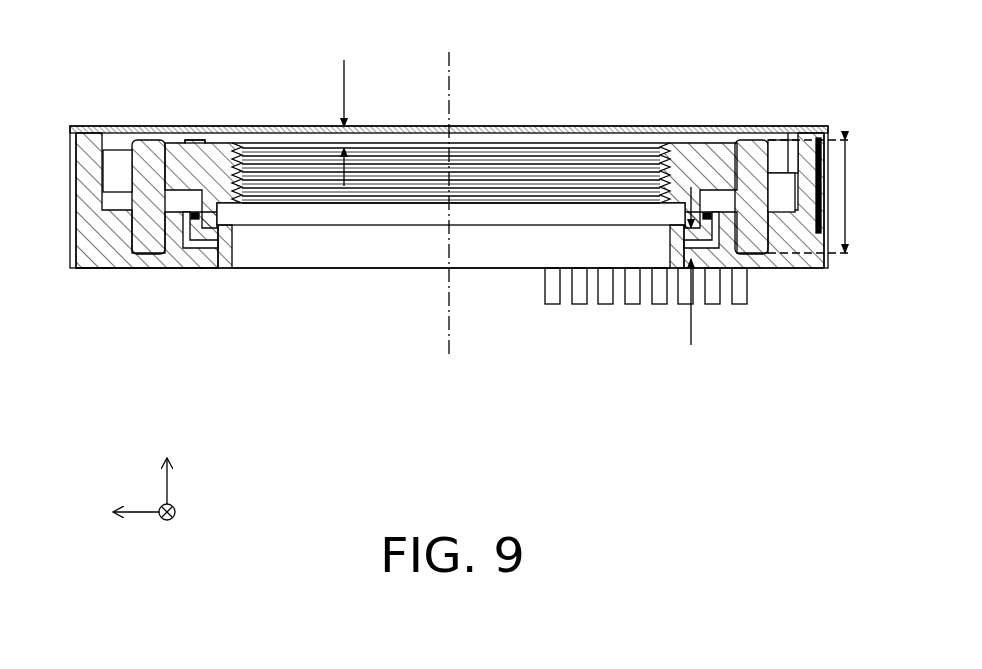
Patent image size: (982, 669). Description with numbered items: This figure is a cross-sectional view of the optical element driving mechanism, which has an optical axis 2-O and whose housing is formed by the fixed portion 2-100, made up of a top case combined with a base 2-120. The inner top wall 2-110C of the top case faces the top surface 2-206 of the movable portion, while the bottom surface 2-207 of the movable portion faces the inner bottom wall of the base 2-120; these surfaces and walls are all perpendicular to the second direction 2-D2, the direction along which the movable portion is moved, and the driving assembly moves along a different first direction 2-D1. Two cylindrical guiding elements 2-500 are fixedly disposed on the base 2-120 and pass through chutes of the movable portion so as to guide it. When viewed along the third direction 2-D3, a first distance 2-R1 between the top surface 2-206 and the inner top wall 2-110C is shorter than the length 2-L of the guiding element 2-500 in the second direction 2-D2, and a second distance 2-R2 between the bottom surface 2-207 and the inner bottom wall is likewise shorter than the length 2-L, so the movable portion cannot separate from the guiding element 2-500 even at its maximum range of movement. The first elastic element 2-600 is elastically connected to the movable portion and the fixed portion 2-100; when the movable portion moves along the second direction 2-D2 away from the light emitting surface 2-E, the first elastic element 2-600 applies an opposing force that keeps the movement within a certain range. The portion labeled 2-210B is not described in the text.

The fixed portion 2-100 is at (112, 270).
The inner top wall 2-110C is at (314, 131).
The base 2-120 is at (90, 266).
The guiding element 2-500 is at (152, 140).
The first elastic element 2-600 is at (208, 148).
The top surface 2-206 is at (228, 128).
The bottom surface 2-207 is at (221, 246).
The engaging hook 2-210B is at (207, 257).
The light emitting surface 2-E is at (497, 268).
The optical axis 2-O is at (449, 184).
The first distance 2-R1 is at (378, 123).
The second distance 2-R2 is at (654, 268).
The length 2-L is at (833, 196).
The first direction 2-D1 is at (100, 512).
The second direction 2-D2 is at (167, 461).
The third direction 2-D3 is at (204, 512).